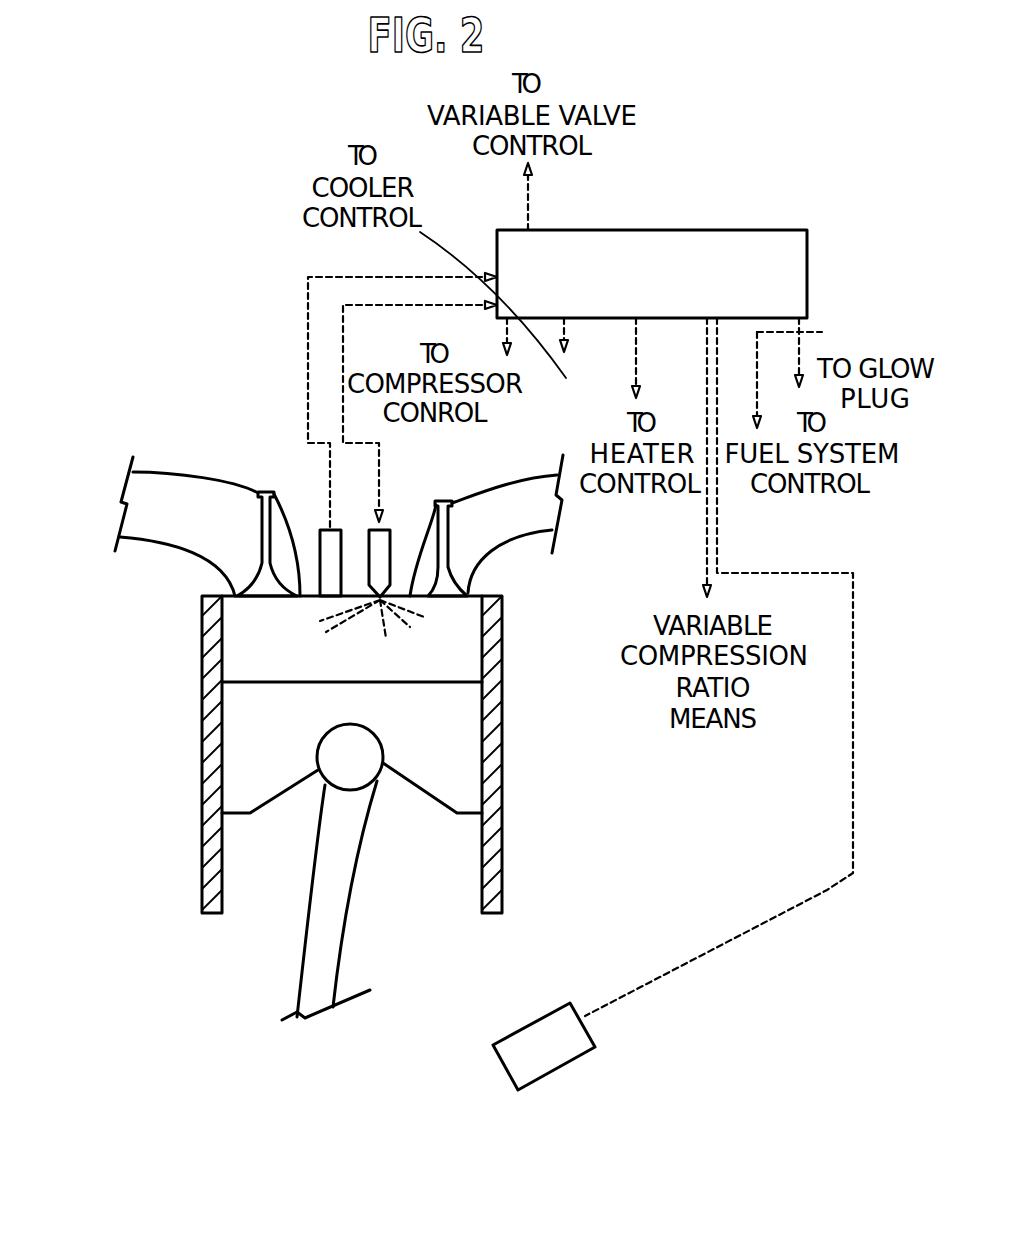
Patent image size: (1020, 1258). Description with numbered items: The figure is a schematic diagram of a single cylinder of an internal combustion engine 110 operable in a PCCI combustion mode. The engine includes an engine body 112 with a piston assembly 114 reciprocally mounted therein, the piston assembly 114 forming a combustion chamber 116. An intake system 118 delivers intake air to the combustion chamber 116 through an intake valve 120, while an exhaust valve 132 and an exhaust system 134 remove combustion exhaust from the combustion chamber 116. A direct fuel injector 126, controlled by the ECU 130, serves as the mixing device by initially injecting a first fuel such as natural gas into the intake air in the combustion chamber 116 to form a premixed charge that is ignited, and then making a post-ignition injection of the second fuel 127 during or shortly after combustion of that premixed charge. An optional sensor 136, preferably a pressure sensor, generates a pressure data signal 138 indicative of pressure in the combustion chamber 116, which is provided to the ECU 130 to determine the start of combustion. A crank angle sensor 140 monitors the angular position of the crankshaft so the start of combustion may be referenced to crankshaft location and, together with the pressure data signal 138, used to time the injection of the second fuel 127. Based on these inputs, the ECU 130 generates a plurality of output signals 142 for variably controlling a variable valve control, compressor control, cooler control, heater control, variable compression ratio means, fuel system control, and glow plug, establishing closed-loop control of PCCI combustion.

The internal combustion engine 110 is at (142, 343).
The engine body 112 is at (220, 663).
The piston assembly 114 is at (452, 760).
The combustion chamber 116 is at (458, 665).
The intake system 118 is at (170, 543).
The intake valve 120 is at (274, 494).
The direct fuel injector 126 is at (392, 548).
The second fuel 127 is at (407, 620).
The ECU 130 is at (728, 230).
The exhaust valve 132 is at (452, 503).
The exhaust system 134 is at (500, 550).
The sensor 136 is at (345, 548).
The pressure data signal 138 is at (303, 285).
The crank angle sensor 140 is at (553, 1003).
The output signals 142 is at (533, 203).